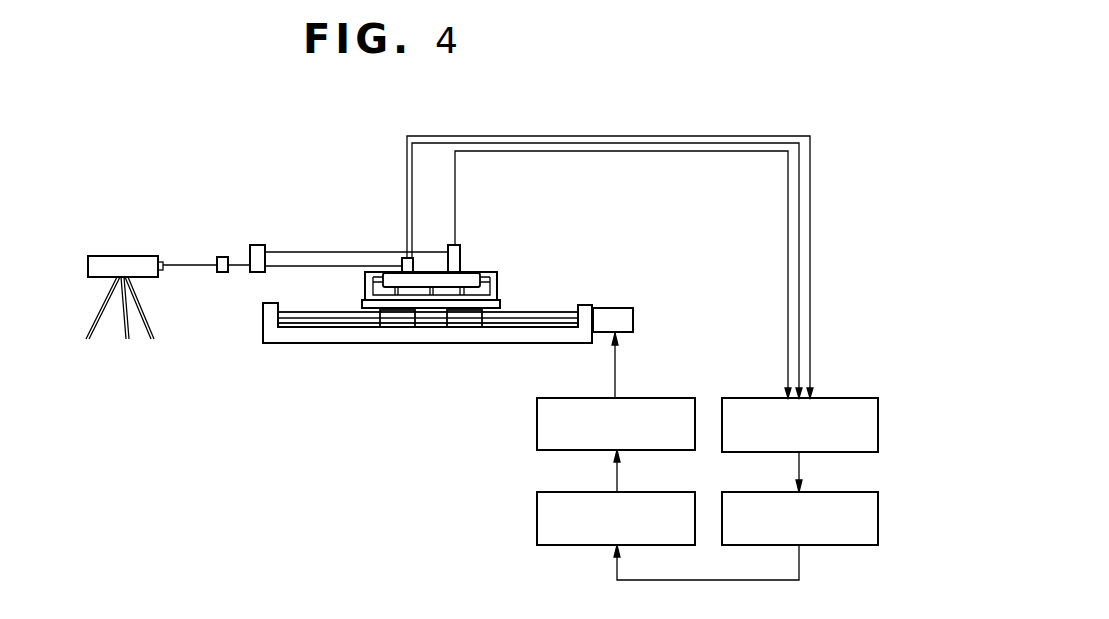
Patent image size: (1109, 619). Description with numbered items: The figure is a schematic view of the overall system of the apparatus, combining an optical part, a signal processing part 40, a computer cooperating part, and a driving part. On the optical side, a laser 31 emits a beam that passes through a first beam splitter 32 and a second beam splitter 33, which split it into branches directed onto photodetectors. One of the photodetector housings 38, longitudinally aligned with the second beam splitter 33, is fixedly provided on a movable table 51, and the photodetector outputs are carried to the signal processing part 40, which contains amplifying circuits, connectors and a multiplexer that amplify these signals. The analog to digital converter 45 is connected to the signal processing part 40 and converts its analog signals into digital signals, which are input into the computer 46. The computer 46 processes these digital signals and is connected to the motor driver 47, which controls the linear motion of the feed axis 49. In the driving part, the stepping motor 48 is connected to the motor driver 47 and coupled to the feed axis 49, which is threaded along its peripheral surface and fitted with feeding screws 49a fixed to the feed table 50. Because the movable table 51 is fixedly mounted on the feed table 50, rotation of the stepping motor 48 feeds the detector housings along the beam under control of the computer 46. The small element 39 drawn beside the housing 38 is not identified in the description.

The laser 31 is at (125, 256).
The first beam splitter 32 is at (222, 257).
The second beam splitter 33 is at (258, 245).
The housing 38 is at (404, 258).
The photodetector 39 is at (459, 252).
The movable table 51 is at (467, 277).
The stepping motor 48 is at (614, 309).
The feed axis 49 is at (302, 318).
The feeding screws 49a is at (457, 325).
The feed table 50 is at (365, 305).
The motor driver 47 is at (537, 423).
The computer 46 is at (537, 513).
The signal processing part 40 is at (878, 413).
The analog to digital converter 45 is at (878, 517).